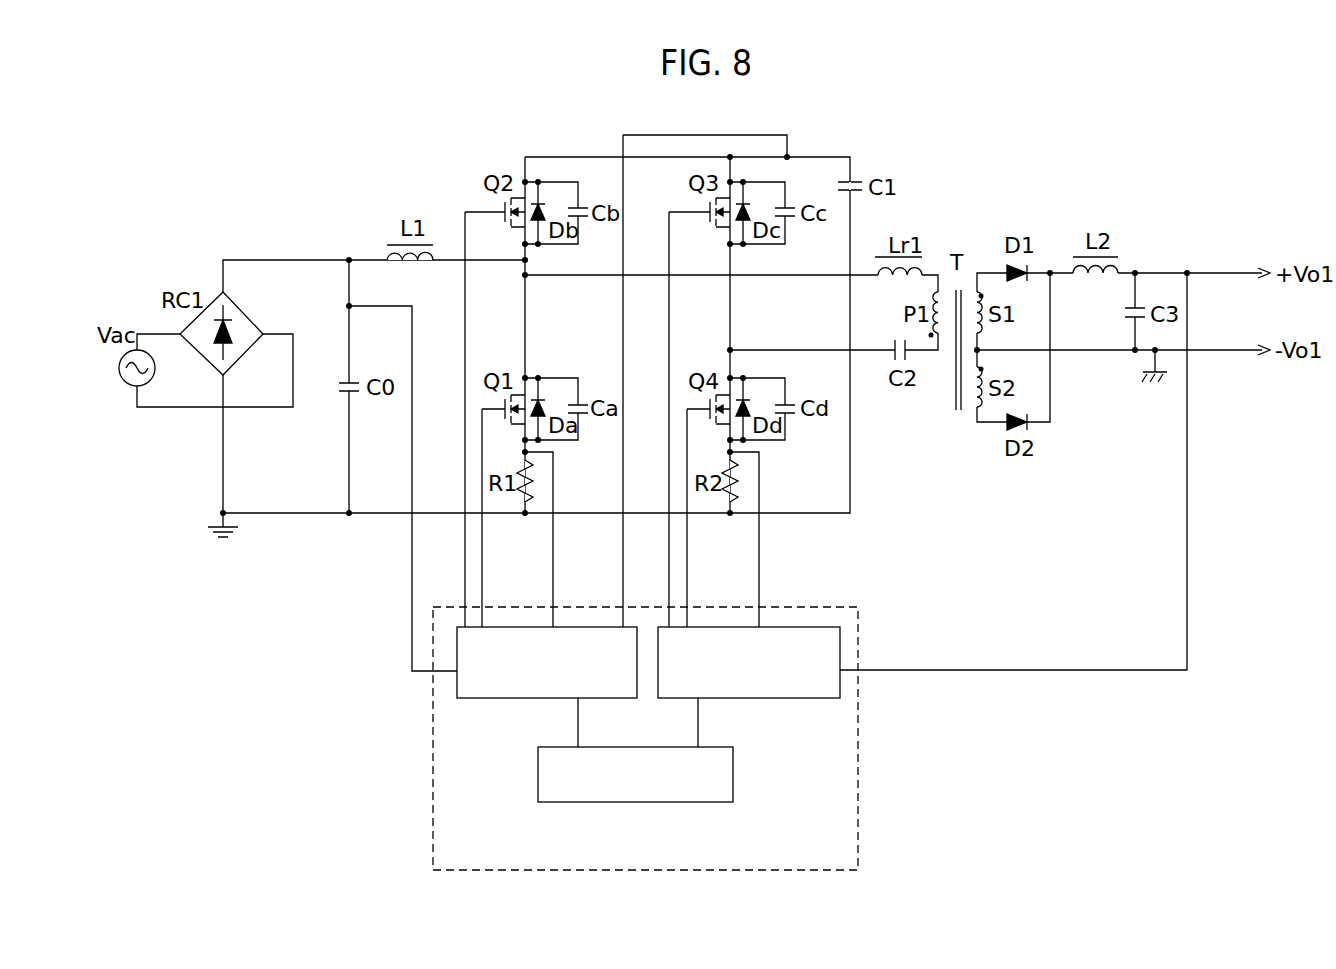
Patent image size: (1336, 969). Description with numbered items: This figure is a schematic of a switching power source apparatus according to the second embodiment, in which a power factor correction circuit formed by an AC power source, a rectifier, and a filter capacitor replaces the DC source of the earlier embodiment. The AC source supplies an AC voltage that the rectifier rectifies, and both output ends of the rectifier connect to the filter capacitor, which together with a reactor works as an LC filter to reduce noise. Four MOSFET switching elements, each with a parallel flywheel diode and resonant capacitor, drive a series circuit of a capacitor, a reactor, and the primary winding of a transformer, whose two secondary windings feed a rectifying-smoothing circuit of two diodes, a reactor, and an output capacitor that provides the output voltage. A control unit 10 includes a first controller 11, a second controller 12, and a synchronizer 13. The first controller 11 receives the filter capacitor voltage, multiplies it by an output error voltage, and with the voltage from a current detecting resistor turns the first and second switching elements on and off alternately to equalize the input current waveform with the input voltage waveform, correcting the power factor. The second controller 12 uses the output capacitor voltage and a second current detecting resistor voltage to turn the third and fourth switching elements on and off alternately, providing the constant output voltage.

The control unit 10 is at (858, 745).
The first controller 11 is at (500, 698).
The second controller 12 is at (786, 698).
The synchronizer 13 is at (733, 785).